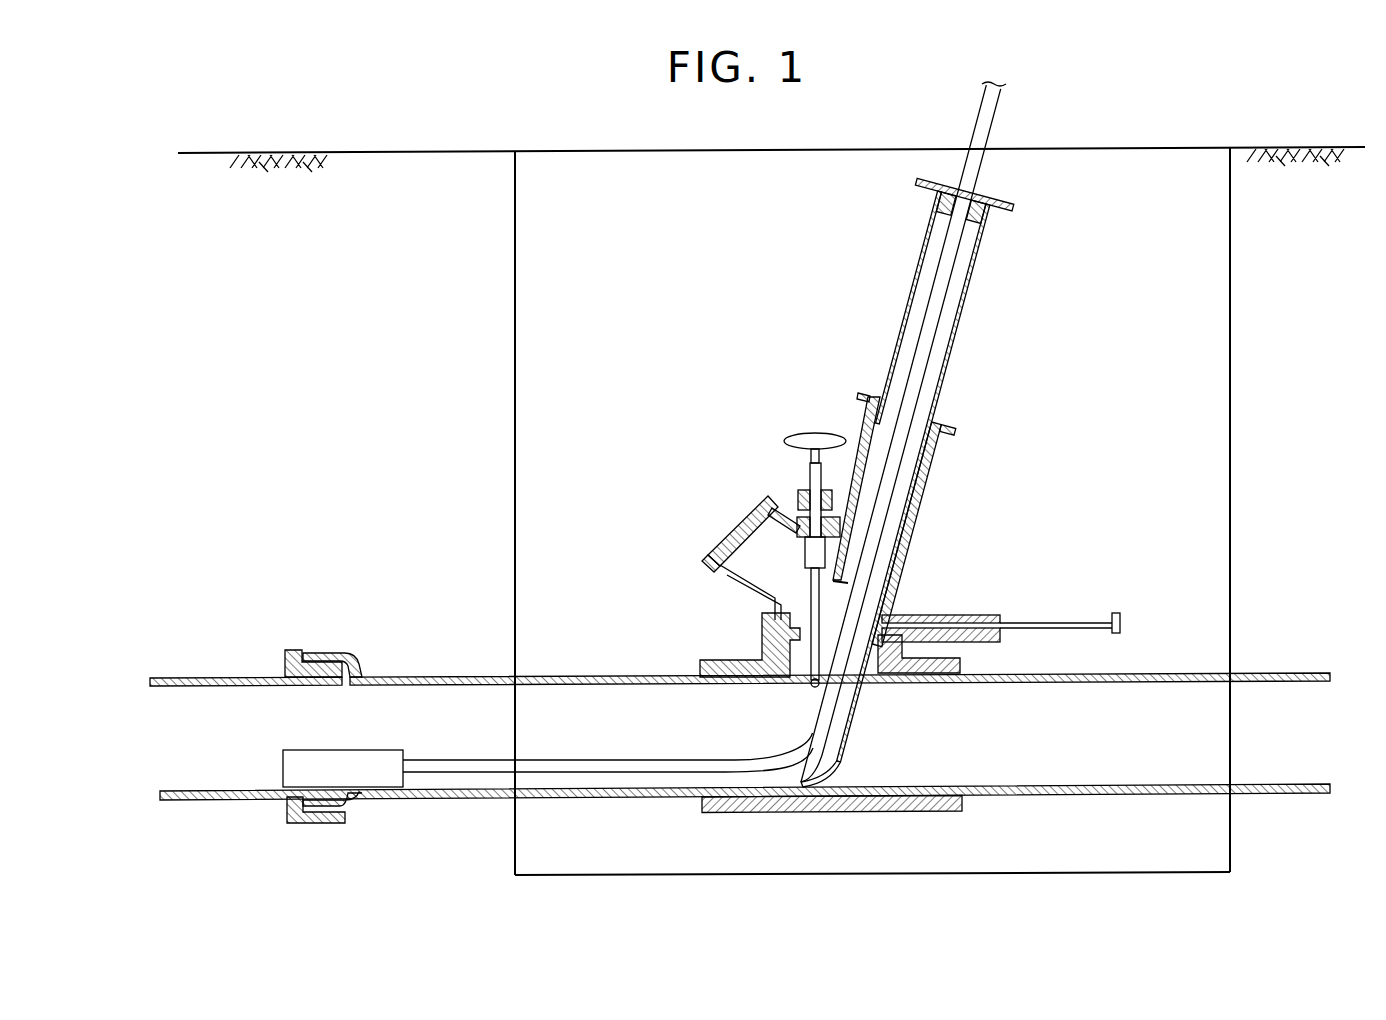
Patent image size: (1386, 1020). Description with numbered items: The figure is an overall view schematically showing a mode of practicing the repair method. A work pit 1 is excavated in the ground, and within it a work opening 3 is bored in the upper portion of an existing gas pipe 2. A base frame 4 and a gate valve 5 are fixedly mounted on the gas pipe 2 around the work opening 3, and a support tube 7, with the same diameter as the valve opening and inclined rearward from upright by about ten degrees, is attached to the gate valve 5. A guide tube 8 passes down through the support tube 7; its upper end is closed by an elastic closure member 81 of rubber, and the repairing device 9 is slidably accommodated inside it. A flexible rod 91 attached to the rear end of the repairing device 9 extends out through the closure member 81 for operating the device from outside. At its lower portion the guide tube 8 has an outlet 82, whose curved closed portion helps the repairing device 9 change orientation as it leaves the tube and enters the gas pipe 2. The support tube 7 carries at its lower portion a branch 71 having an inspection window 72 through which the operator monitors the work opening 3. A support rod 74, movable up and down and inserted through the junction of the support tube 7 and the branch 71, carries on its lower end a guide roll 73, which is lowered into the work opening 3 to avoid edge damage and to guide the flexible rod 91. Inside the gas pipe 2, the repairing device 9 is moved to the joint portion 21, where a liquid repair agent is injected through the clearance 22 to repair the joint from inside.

The work pit 1 is at (1213, 257).
The existing gas pipe 2 is at (570, 675).
The work opening 3 is at (868, 690).
The base frame 4 is at (727, 658).
The gate valve 5 is at (974, 620).
The support tube 7 is at (932, 475).
The guide tube 8 is at (955, 338).
The repairing device 9 is at (355, 760).
The joint portion 21 is at (318, 648).
The clearance 22 is at (355, 650).
The branch 71 is at (770, 522).
The inspection window 72 is at (740, 521).
The guide roll 73 is at (805, 689).
The support rod 74 is at (808, 483).
The elastic closure member 81 is at (990, 196).
The outlet 82 is at (855, 742).
The flexible rod 91 is at (535, 760).